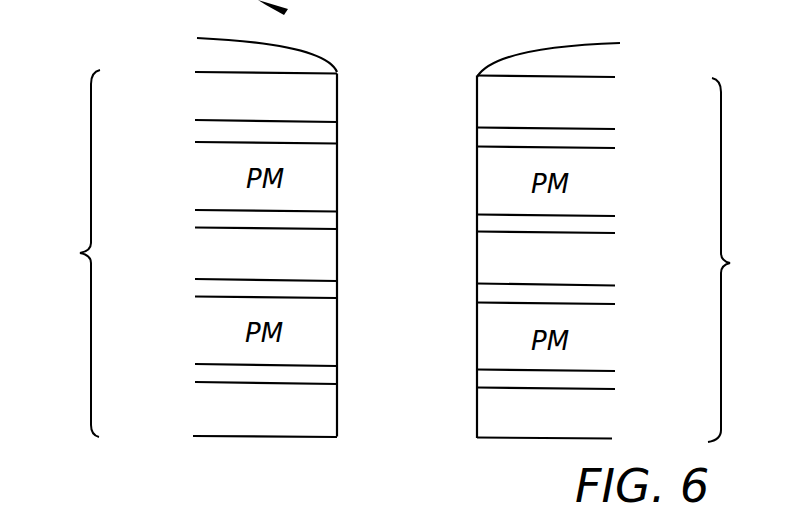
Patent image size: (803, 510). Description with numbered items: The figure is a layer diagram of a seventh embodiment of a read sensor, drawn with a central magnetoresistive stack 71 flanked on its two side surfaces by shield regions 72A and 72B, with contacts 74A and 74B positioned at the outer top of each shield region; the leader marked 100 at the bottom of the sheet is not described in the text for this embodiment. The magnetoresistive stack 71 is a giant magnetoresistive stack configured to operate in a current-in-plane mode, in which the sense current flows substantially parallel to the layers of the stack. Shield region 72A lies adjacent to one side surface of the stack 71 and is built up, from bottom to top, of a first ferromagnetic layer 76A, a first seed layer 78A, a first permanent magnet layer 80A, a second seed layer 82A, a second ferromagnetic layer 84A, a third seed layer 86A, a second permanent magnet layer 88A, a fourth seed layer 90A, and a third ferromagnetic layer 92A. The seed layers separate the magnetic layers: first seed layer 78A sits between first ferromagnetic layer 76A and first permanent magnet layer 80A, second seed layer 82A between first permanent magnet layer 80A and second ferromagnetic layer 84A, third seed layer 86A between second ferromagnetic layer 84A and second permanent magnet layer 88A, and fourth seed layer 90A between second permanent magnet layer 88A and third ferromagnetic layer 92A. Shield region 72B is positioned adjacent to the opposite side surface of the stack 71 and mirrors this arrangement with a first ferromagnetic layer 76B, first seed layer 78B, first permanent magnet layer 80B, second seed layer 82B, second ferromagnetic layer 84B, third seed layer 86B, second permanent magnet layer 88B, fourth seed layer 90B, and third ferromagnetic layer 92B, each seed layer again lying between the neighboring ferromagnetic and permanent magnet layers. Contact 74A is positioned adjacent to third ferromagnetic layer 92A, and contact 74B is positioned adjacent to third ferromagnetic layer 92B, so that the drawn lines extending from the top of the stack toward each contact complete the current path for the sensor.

The magnetoresistive stack 71 is at (372, 92).
The shield region 72A is at (65, 253).
The shield region 72B is at (746, 260).
The contact 74A is at (215, 54).
The contact 74B is at (600, 61).
The first ferromagnetic layer 76A is at (218, 408).
The first ferromagnetic layer 76B is at (605, 418).
The first seed layer 78A is at (218, 373).
The first seed layer 78B is at (605, 380).
The first permanent magnet layer 80A is at (210, 331).
The first permanent magnet layer 80B is at (598, 339).
The second seed layer 82A is at (205, 288).
The second seed layer 82B is at (600, 294).
The second ferromagnetic layer 84A is at (220, 253).
The second ferromagnetic layer 84B is at (600, 263).
The third seed layer 86A is at (220, 218).
The third seed layer 86B is at (600, 224).
The second permanent magnet layer 88A is at (212, 175).
The second permanent magnet layer 88B is at (597, 183).
The fourth seed layer 90A is at (205, 132).
The fourth seed layer 90B is at (592, 137).
The third ferromagnetic layer 92A is at (215, 97).
The third ferromagnetic layer 92B is at (595, 104).
The sensor structure 100 is at (240, 509).